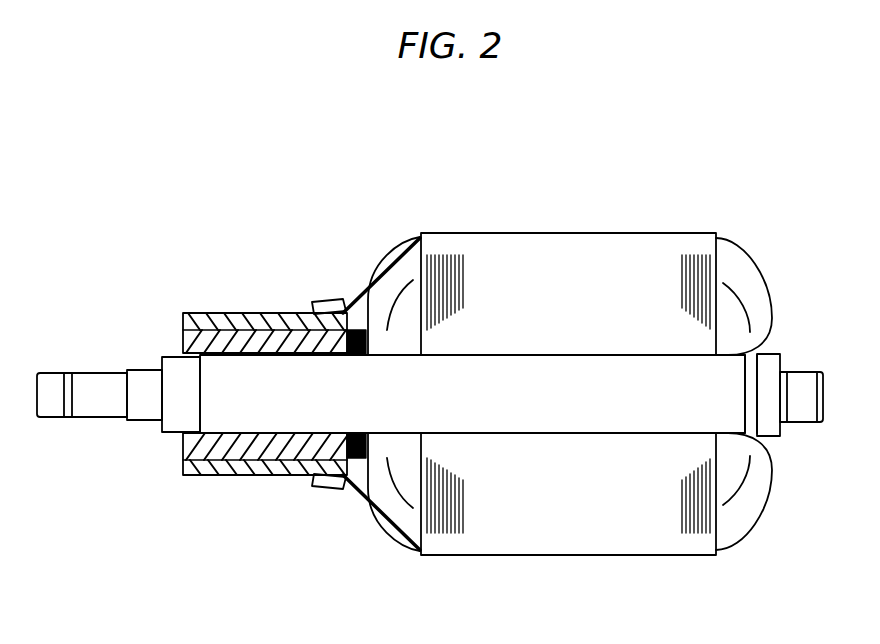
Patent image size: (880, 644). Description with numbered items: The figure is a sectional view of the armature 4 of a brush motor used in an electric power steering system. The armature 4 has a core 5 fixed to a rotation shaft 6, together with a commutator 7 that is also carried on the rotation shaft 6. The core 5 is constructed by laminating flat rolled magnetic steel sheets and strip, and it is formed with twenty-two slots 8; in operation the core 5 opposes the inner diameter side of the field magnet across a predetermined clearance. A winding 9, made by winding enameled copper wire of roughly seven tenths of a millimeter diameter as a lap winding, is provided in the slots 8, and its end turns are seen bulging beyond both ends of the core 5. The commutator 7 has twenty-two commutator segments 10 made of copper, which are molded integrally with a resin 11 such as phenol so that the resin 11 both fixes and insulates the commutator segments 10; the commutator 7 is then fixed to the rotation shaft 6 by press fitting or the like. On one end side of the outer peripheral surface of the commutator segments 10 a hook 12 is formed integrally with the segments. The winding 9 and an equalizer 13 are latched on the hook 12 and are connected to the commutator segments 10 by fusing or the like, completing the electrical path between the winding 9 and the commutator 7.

The armature 4 is at (573, 207).
The core 5 is at (472, 236).
The rotation shaft 6 is at (178, 360).
The commutator 7 is at (257, 312).
The slot 8 is at (416, 243).
The winding 9 is at (385, 265).
The commutator segment 10 is at (230, 476).
The resin 11 is at (188, 451).
The hook 12 is at (322, 487).
The equalizer 13 is at (362, 478).